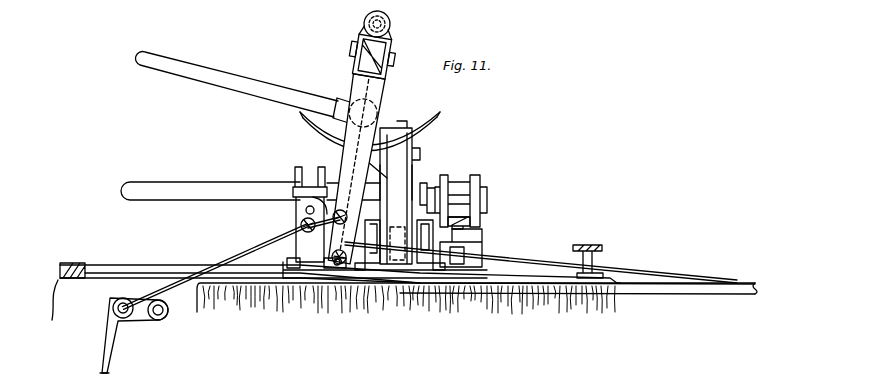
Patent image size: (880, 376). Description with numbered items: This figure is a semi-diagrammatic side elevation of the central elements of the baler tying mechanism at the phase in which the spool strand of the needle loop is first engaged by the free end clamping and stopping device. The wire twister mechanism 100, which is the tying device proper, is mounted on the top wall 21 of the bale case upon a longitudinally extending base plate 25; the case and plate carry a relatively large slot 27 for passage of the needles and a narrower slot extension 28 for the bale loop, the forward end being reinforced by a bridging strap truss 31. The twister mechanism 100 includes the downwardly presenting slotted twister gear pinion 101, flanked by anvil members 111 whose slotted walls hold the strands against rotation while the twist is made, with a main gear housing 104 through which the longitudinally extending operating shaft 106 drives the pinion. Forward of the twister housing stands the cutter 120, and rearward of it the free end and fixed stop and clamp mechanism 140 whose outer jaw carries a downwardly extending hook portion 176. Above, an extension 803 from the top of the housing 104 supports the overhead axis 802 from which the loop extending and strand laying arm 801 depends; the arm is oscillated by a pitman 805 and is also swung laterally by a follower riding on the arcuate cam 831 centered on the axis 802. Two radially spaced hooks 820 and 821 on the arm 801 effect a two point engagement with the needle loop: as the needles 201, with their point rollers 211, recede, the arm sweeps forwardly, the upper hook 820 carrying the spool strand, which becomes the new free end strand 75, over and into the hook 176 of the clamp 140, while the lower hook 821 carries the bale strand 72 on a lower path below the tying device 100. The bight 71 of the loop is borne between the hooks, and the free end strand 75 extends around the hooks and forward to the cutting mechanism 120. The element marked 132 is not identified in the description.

The overhead axis 802 is at (388, 48).
The extension 803 is at (384, 91).
The wire twister mechanism 100 is at (397, 181).
The arcuate cam 831 is at (439, 116).
The pitman 805 is at (235, 79).
The loop extending and strand laying arm 801 is at (361, 134).
The main gear housing 104 is at (400, 172).
The spool 132 is at (474, 176).
The hook 820 is at (348, 164).
The operating shaft 106 is at (212, 178).
The free end and fixed stop and clamp mechanism 140 is at (290, 218).
The bight 71 is at (298, 232).
The hook portion 176 is at (295, 258).
The free end strand 75 is at (233, 257).
The base plate 25 is at (70, 264).
The slot 27 is at (113, 265).
The top wall 21 is at (62, 283).
The cutter 120 is at (452, 245).
The bridging strap truss 31 is at (590, 251).
The needle 201 is at (100, 350).
The point roller 211 is at (155, 322).
The bale strand 72 is at (408, 323).
The hook 821 is at (337, 272).
The anvil member 111 is at (360, 271).
The twister gear pinion 101 is at (398, 262).
The slot extension 28 is at (568, 288).